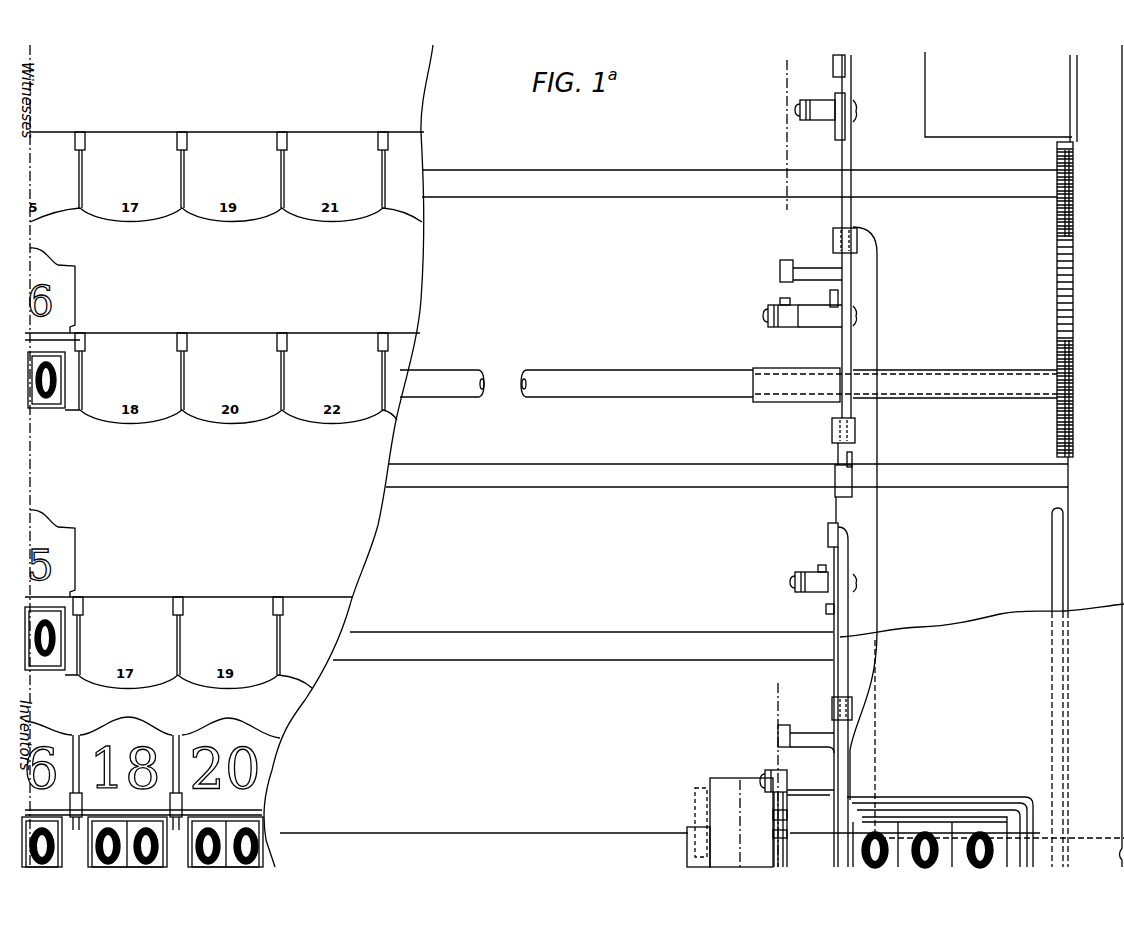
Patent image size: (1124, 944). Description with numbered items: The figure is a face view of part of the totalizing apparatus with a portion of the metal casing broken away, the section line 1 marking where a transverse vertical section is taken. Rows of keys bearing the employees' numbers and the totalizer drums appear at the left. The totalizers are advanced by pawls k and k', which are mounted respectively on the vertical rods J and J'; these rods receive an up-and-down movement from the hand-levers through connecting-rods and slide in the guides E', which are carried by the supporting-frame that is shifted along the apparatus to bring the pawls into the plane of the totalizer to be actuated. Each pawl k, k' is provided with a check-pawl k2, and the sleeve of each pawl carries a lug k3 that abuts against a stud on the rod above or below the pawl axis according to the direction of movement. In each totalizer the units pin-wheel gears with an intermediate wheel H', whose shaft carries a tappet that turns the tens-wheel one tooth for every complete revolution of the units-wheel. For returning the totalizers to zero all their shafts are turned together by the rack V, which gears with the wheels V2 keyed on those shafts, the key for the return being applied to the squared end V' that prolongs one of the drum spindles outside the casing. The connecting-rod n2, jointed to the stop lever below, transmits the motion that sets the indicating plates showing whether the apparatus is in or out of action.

The section line 1 is at (773, 135).
The vertical rod J is at (854, 289).
The vertical rod J' is at (872, 697).
The guide E' is at (825, 469).
The pawl k is at (808, 227).
The pawl k' is at (798, 680).
The check-pawl k2 is at (828, 533).
The lug k3 is at (832, 611).
The intermediate wheel H' is at (753, 775).
The rack V is at (1051, 299).
The wheel V2 is at (1083, 395).
The squared end V' is at (974, 832).
The connecting-rod n2 is at (1055, 553).